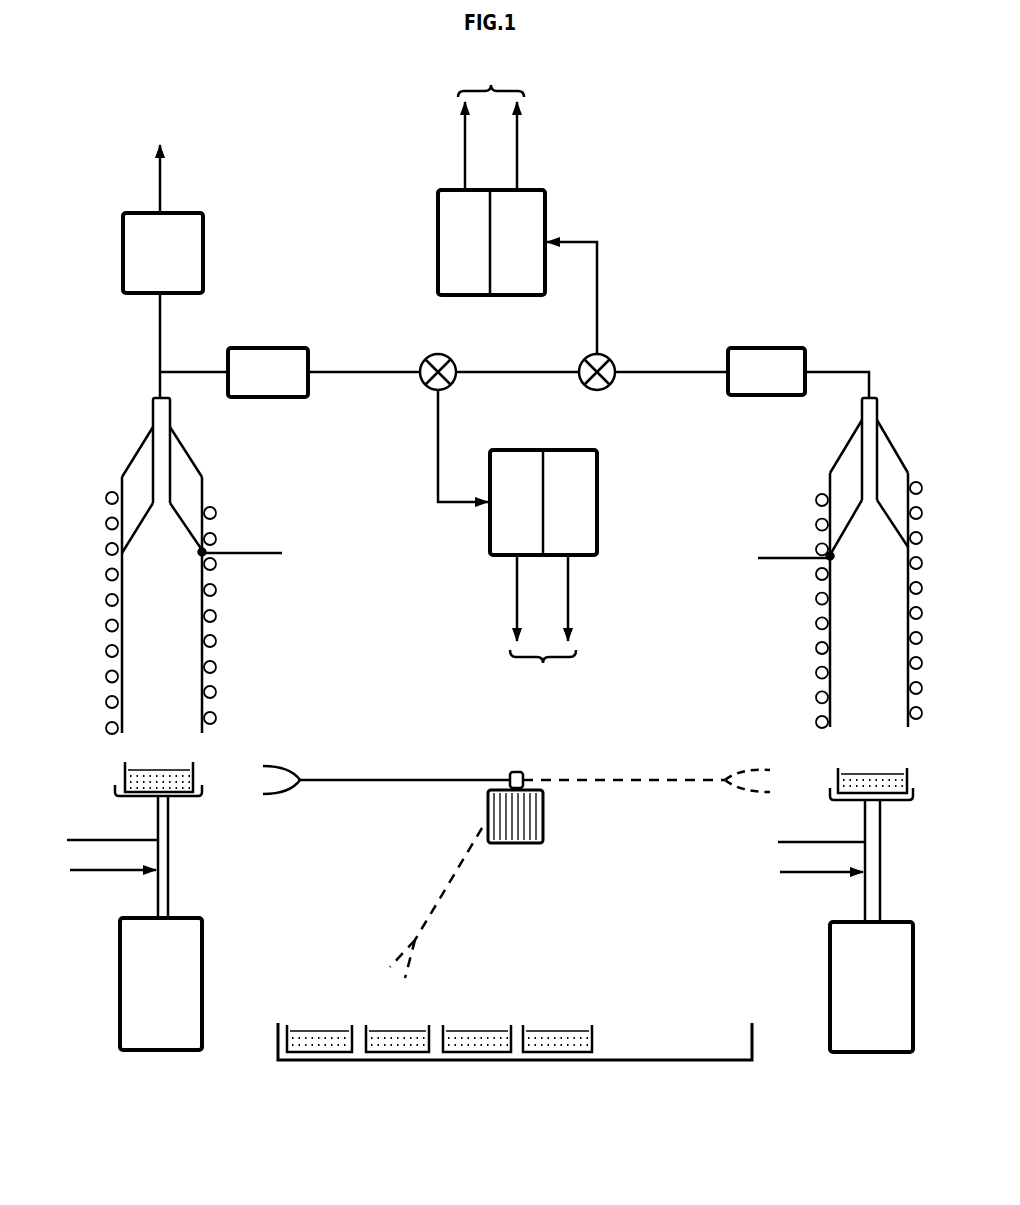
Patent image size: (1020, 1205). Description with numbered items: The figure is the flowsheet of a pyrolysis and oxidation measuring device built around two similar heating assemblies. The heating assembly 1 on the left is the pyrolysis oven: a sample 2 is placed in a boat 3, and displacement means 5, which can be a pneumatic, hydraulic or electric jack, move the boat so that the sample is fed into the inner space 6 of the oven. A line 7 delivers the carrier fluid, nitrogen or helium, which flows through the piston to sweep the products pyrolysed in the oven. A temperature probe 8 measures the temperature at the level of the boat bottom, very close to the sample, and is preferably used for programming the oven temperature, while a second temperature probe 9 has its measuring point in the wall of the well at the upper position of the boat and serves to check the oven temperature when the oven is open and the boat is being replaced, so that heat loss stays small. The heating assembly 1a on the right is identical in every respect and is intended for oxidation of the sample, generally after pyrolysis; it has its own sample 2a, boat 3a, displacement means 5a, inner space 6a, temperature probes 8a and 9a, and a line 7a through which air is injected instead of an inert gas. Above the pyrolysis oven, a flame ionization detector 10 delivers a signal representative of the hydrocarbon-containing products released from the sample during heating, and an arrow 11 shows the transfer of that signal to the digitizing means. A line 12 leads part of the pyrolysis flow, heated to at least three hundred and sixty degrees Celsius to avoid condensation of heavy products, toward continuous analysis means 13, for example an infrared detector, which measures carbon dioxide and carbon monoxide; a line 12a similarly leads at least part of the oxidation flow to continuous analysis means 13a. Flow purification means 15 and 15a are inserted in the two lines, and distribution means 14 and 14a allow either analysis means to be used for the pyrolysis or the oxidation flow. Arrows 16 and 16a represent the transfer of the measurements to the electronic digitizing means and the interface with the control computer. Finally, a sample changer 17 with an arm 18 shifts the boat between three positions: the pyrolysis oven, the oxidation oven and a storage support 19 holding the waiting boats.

The heating assembly 1 is at (120, 432).
The heating assembly 1a is at (898, 414).
The sample 2 is at (122, 763).
The sample 2a is at (836, 770).
The boat 3 is at (114, 795).
The boat 3a is at (830, 800).
The displacement means 5 is at (161, 984).
The displacement means 5a is at (871, 987).
The inner space of the oven 6 is at (180, 613).
The inner space of the oven 6a is at (850, 636).
The carrier fluid line 7 is at (94, 873).
The carrier fluid line 7a is at (812, 873).
The temperature probe 8 is at (67, 840).
The temperature probe 8a is at (778, 842).
The temperature probe 9 is at (242, 552).
The temperature probe 9a is at (782, 556).
The flame ionization detector 10 is at (163, 253).
The arrow 11 is at (160, 176).
The line 12 is at (183, 371).
The line 12a is at (838, 371).
The continuous analysis means 13 is at (604, 467).
The continuous analysis means 13a is at (560, 194).
The distribution means 14 is at (441, 353).
The distribution means 14a is at (597, 391).
The flow purification means 15 is at (268, 372).
The flow purification means 15a is at (766, 371).
The arrow 16 is at (543, 629).
The arrow 16a is at (491, 125).
The sample changer 17 is at (488, 802).
The arm 18 is at (360, 782).
The storage support 19 is at (379, 1078).